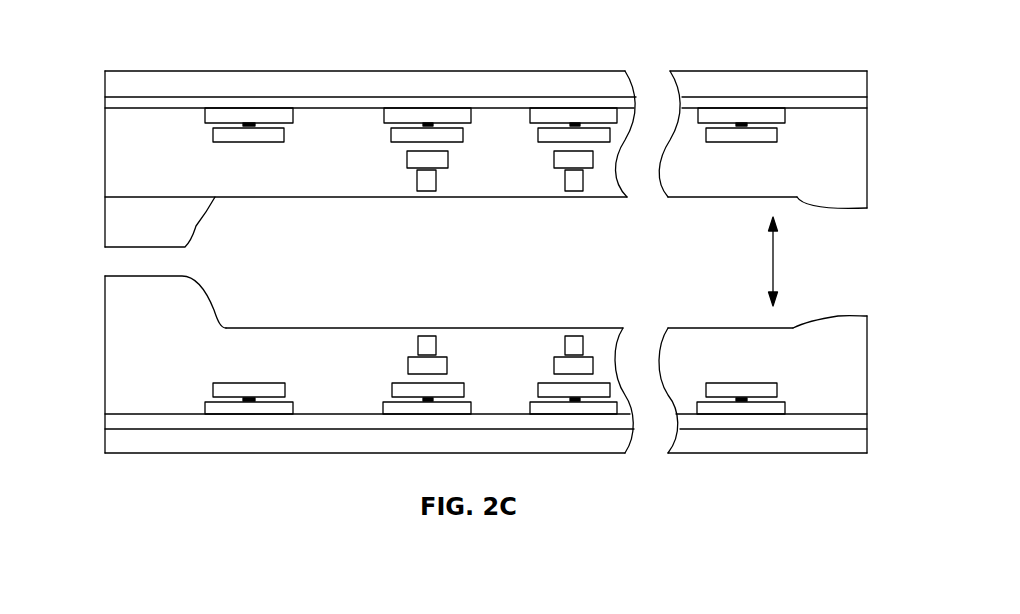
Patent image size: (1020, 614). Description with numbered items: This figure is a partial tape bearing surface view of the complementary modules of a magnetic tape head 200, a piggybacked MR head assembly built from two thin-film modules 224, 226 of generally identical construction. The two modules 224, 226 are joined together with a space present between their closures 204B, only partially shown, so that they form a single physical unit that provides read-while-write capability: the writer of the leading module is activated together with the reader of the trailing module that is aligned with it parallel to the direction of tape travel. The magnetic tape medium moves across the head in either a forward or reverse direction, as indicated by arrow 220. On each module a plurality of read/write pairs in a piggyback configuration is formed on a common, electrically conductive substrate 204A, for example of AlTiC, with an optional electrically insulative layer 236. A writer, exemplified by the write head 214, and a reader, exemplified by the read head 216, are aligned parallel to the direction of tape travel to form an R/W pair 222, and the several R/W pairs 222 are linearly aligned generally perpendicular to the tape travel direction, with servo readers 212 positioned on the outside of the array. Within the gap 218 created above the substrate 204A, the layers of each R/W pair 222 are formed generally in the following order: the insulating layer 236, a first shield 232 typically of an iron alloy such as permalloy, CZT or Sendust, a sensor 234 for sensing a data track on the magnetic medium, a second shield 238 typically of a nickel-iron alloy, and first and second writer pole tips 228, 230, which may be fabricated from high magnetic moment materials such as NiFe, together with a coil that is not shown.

The magnetic tape head 200 is at (415, 50).
The common substrate 204A is at (232, 93).
The closures 204B is at (200, 236).
The servo readers 212 is at (293, 370).
The write head 214 is at (420, 333).
The read head 216 is at (411, 383).
The gap 218 is at (293, 197).
The arrow 220 is at (773, 266).
The R/W pair 222 is at (438, 304).
The thin-film module 224 is at (795, 71).
The thin-film module 226 is at (780, 453).
The first writer pole tip 228 is at (408, 366).
The second writer pole tip 230 is at (417, 345).
The first shield 232 is at (383, 407).
The sensor 234 is at (378, 392).
The insulating layer 236 is at (858, 410).
The second shield 238 is at (392, 385).